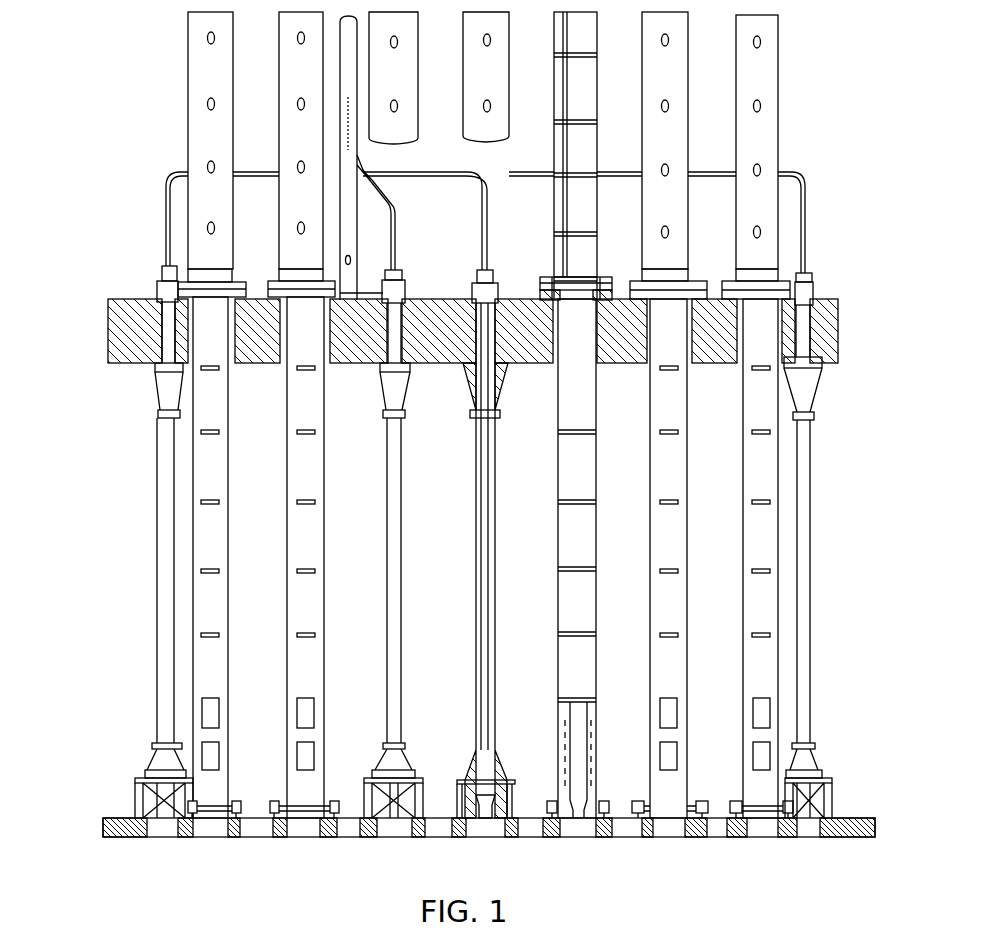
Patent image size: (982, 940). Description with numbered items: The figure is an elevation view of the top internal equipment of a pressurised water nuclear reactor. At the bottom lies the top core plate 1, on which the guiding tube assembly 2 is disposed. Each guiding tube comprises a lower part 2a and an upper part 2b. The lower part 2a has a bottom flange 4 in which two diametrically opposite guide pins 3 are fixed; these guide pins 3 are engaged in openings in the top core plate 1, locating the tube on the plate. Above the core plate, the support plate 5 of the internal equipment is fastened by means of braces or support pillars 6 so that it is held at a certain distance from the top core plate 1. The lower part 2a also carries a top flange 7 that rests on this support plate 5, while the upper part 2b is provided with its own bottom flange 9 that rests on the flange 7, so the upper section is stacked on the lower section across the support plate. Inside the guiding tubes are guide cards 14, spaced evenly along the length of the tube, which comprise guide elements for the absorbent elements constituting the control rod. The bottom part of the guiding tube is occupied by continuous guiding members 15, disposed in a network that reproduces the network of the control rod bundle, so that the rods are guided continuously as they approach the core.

The top core plate 1 is at (846, 828).
The guiding tube assembly 2 is at (512, 415).
The lower part of the guiding tube 2a is at (765, 490).
The upper part of the guiding tube 2b is at (760, 153).
The guide pins 3 is at (637, 801).
The bottom flange 4 is at (724, 806).
The support plate 5 is at (828, 347).
The support pillars 6 is at (168, 658).
The top flange 7 is at (786, 300).
The bottom flange of the upper part 9 is at (672, 290).
The guide cards 14 is at (578, 232).
The continuous guiding members 15 is at (575, 820).